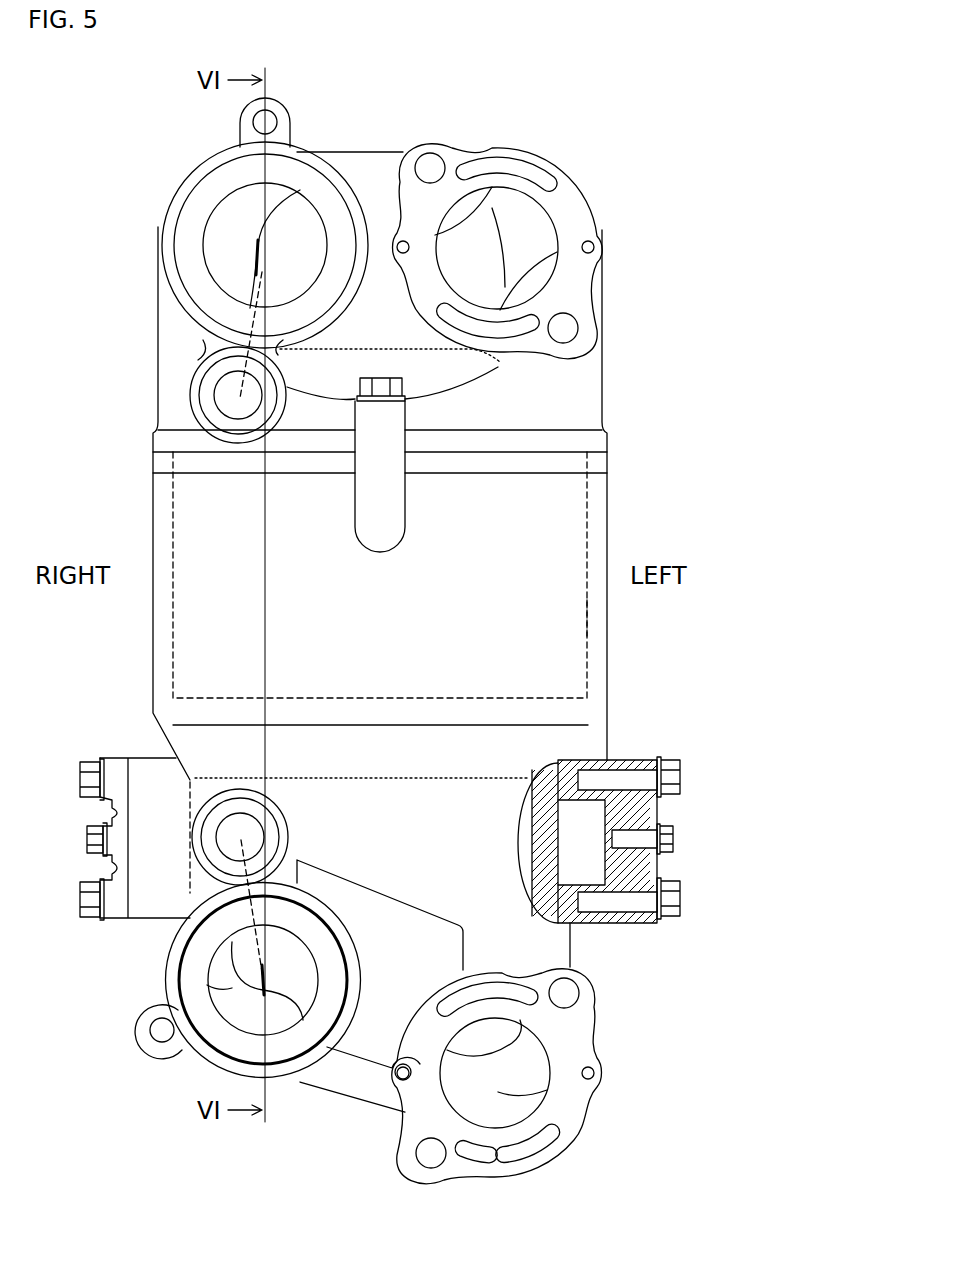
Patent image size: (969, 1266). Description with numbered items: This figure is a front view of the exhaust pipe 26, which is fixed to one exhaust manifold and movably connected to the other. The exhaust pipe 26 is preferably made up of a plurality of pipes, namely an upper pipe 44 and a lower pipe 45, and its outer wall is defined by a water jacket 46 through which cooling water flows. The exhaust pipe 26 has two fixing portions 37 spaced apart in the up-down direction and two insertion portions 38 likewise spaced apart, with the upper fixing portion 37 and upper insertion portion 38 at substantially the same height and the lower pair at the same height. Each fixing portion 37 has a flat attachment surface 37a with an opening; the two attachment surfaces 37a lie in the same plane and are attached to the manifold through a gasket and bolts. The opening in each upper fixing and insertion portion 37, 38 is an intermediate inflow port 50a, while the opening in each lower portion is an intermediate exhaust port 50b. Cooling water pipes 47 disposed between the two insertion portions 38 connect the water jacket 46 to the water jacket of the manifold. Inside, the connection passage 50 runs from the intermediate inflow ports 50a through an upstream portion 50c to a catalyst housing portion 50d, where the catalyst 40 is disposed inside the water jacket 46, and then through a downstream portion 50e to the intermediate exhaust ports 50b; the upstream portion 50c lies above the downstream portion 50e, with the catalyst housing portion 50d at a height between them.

The exhaust pipe 26 is at (632, 98).
The fixing portion 37 is at (430, 136).
The attachment surface 37a is at (478, 150).
The insertion portion 38 is at (193, 186).
The catalyst 40 is at (173, 513).
The upper pipe 44 is at (602, 400).
The lower pipe 45 is at (605, 505).
The water jacket 46 is at (536, 176).
The cooling water pipe 47 is at (208, 395).
The connection passage 50 is at (562, 372).
The intermediate inflow port 50a is at (225, 233).
The intermediate exhaust port 50b is at (232, 992).
The upstream portion 50c is at (553, 393).
The catalyst housing portion 50d is at (545, 640).
The downstream portion 50e is at (527, 863).